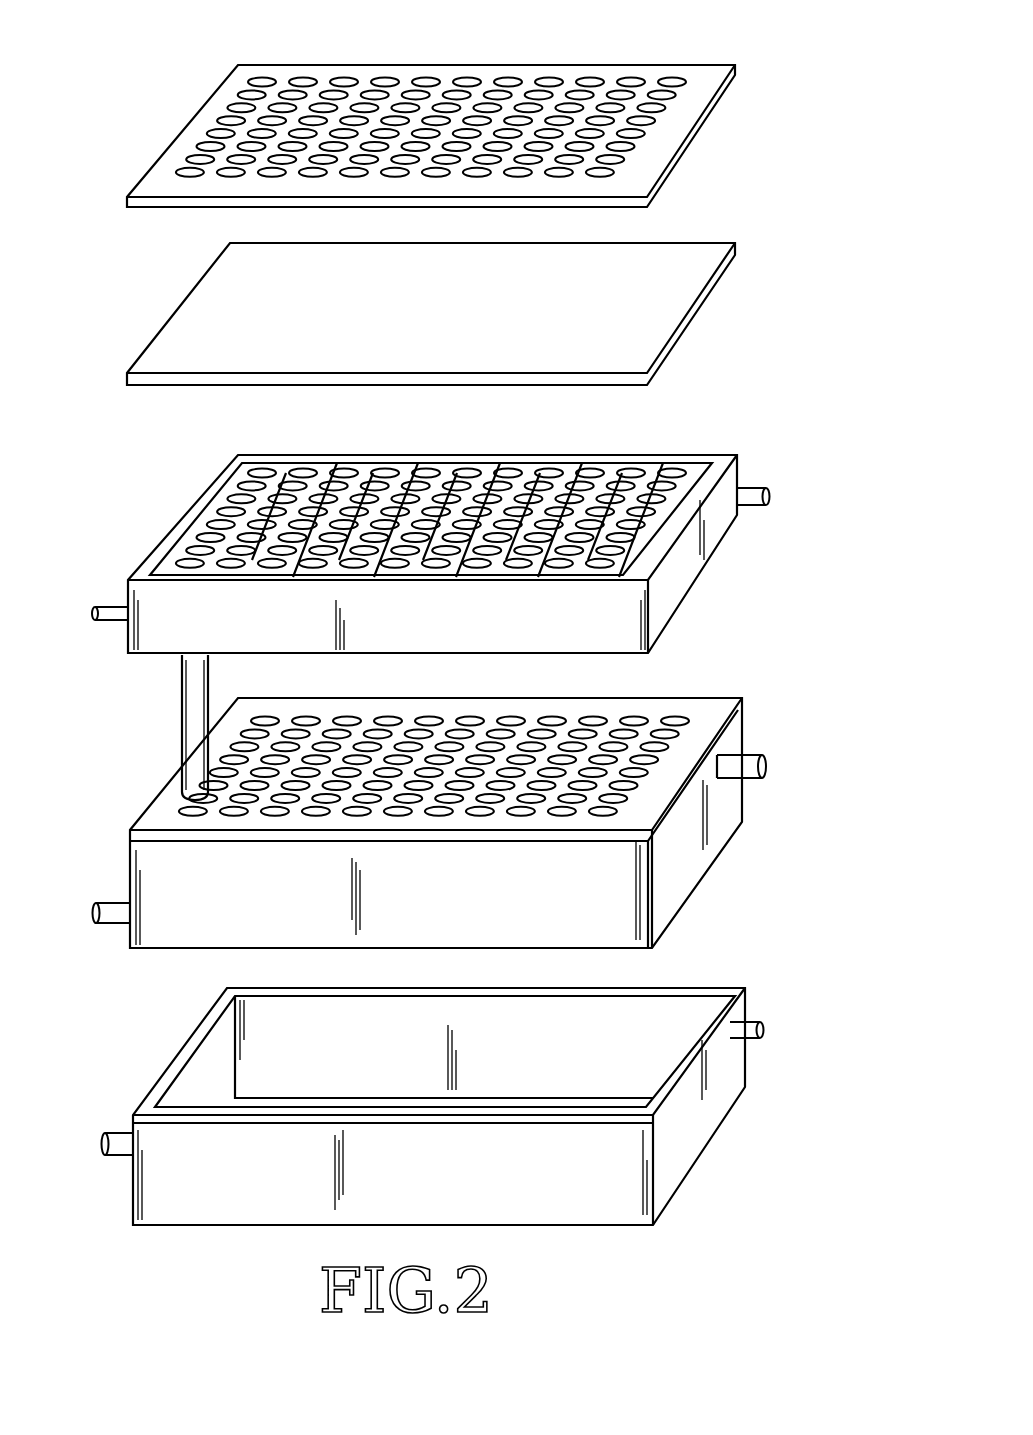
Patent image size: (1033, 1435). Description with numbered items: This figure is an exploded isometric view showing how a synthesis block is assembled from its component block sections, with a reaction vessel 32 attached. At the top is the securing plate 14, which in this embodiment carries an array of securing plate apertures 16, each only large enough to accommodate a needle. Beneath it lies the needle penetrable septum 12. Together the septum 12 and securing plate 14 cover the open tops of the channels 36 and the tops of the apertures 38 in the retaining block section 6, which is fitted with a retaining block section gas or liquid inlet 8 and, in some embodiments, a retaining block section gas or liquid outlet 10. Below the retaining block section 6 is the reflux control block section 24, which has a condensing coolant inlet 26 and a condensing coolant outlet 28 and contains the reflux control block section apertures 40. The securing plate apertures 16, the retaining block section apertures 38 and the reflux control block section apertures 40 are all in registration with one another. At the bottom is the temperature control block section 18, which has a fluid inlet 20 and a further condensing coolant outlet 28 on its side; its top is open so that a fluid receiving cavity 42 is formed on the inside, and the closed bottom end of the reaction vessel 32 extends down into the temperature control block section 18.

The retaining block section 6 is at (427, 532).
The retaining block section gas or liquid inlet 8 is at (762, 488).
The retaining block section gas or liquid outlet 10 is at (100, 620).
The needle penetrable septum 12 is at (718, 245).
The securing plate 14 is at (720, 65).
The securing plate apertures 16 is at (432, 80).
The temperature control block section 18 is at (477, 1073).
The fluid inlet 20 is at (758, 1022).
The reflux control block section 24 is at (478, 786).
The condensing coolant inlet 26 is at (748, 760).
The condensing coolant outlet 28 is at (97, 918).
The reaction vessel 32 is at (182, 695).
The channels 36 is at (708, 483).
The retaining block section apertures 38 is at (240, 503).
The reflux control block section apertures 40 is at (688, 720).
The fluid receiving cavity 42 is at (667, 1020).